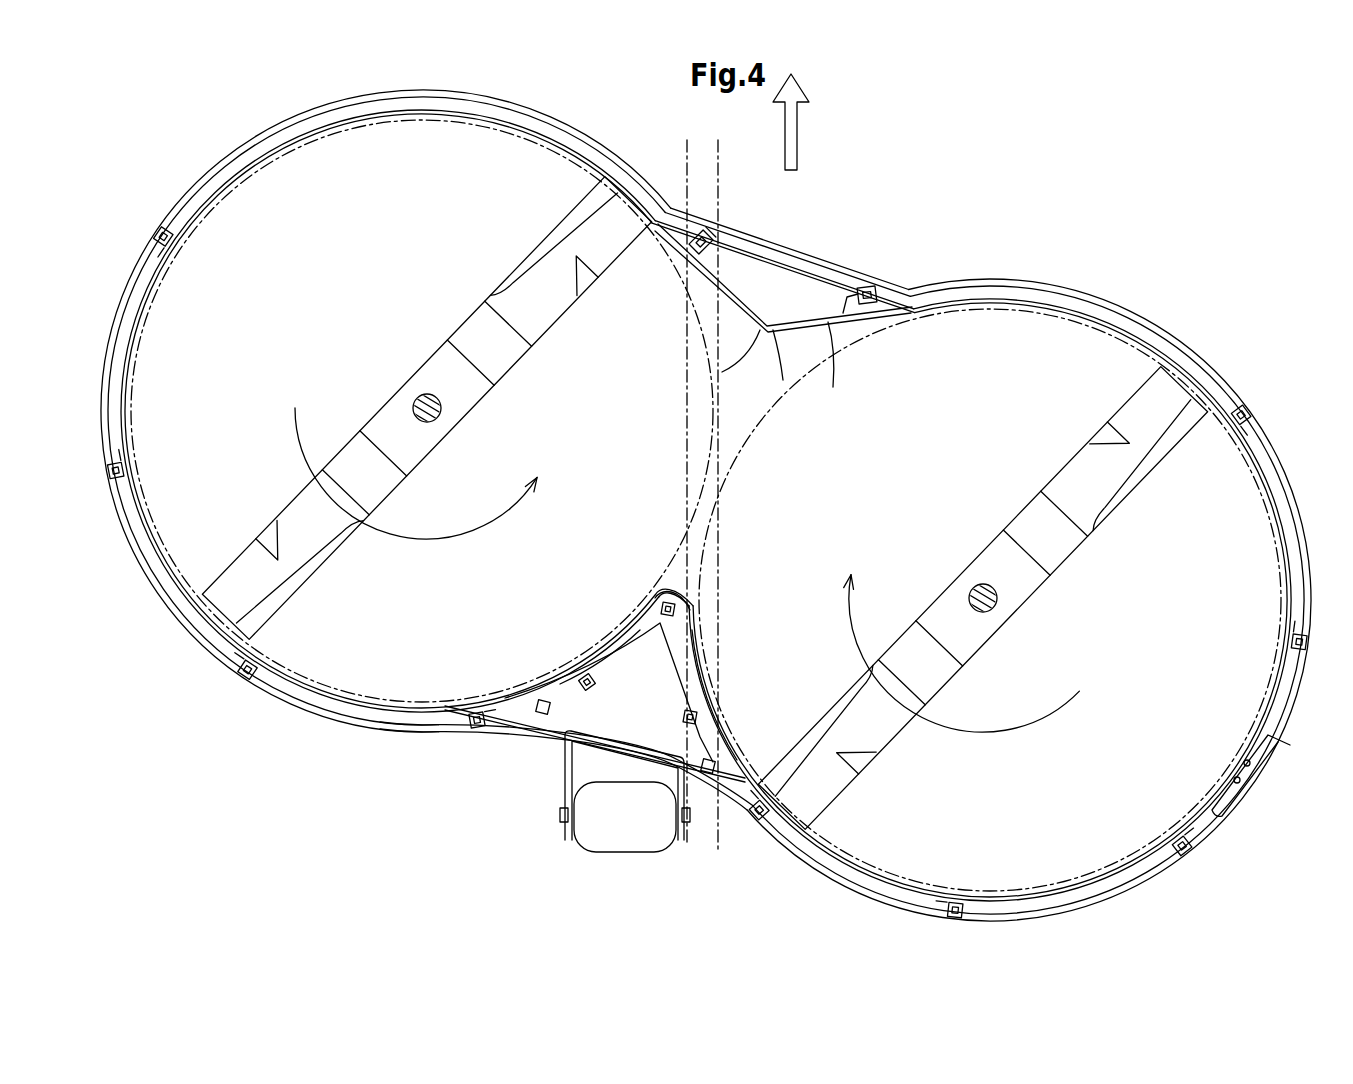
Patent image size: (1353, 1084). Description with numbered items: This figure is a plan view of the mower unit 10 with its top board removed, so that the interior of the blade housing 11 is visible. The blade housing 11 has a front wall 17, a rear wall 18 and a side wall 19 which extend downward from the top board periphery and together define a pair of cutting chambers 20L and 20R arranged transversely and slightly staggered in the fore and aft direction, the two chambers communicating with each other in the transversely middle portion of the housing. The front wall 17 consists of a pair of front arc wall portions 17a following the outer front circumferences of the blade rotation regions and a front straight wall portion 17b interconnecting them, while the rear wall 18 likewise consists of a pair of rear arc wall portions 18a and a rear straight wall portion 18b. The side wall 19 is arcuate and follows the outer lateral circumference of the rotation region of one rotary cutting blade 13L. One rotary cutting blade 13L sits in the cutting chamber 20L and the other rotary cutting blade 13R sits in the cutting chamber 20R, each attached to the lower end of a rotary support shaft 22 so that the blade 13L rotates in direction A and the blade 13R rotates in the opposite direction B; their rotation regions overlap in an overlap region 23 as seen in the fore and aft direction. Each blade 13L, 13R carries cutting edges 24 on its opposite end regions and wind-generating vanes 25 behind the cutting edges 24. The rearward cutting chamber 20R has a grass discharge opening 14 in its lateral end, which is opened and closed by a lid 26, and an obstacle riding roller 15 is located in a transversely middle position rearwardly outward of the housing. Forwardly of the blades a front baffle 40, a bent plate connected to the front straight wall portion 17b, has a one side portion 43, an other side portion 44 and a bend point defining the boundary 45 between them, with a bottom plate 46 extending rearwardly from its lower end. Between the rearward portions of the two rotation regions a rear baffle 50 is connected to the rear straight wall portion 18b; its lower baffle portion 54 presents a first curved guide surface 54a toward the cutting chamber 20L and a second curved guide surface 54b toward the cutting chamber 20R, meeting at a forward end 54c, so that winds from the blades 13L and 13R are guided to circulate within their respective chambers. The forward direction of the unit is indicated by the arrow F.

The mower unit 10 is at (1035, 186).
The blade housing 11 is at (230, 153).
The rotary cutting blade 13L is at (470, 330).
The rotary cutting blade 13R is at (1030, 520).
The grass discharge opening 14 is at (1232, 503).
The obstacle riding roller 15 is at (615, 832).
The front wall 17 is at (706, 505).
The front arc wall portions 17a is at (420, 112).
The front straight wall portion 17b is at (790, 267).
The rear wall 18 is at (653, 798).
The rear arc wall portions 18a is at (350, 703).
The rear straight wall portion 18b is at (557, 722).
The side wall 19 is at (127, 397).
The cutting chamber 20L is at (203, 505).
The cutting chamber 20R is at (1097, 822).
The rotary support shaft 22 is at (444, 402).
The overlap region 23 is at (721, 148).
The cutting edges 24 is at (568, 223).
The wind-generating vanes 25 is at (607, 247).
The lid 26 is at (1273, 695).
The front baffle 40 is at (777, 318).
The one side portion 43 is at (728, 295).
The other side portion 44 is at (834, 326).
The boundary 45 is at (808, 380).
The bottom plate 46 is at (738, 357).
The rear baffle 50 is at (565, 666).
The lower baffle portion 54 is at (673, 614).
The first curved guide surface 54a is at (600, 645).
The second curved guide surface 54b is at (705, 682).
The forward end 54c is at (670, 587).
The direction of rotation A is at (429, 539).
The direction of rotation B is at (1010, 733).
The forward direction F is at (799, 132).